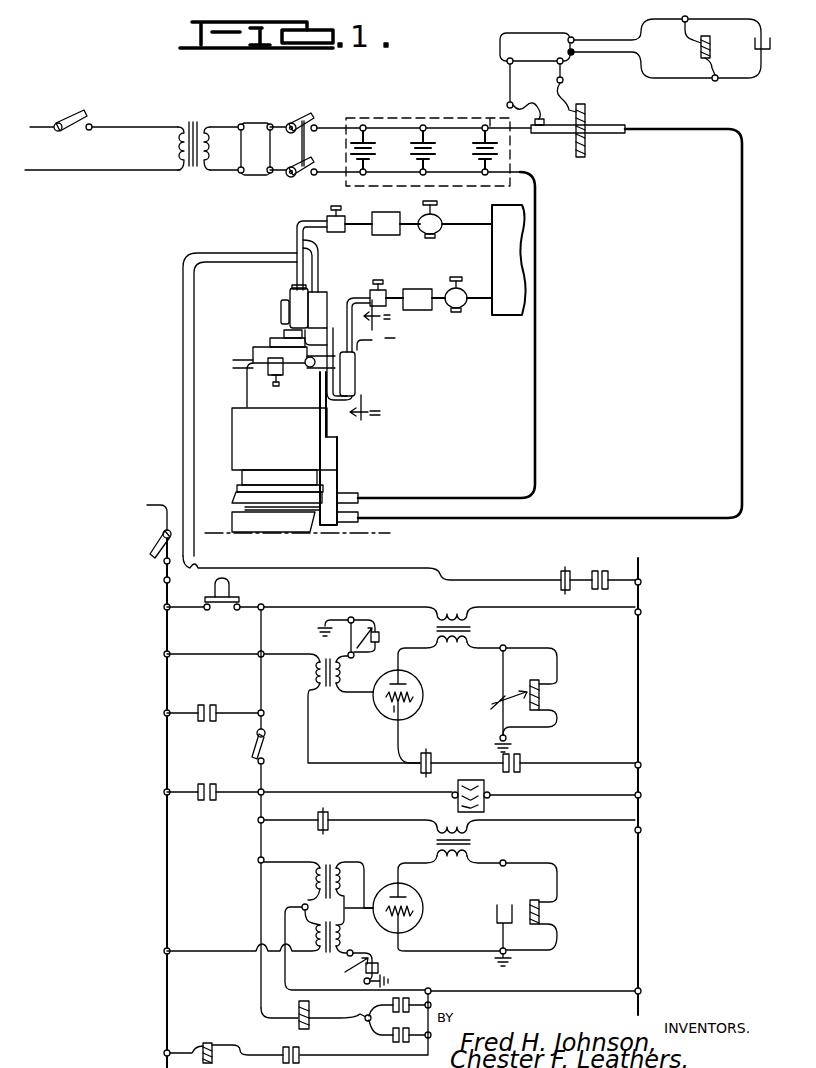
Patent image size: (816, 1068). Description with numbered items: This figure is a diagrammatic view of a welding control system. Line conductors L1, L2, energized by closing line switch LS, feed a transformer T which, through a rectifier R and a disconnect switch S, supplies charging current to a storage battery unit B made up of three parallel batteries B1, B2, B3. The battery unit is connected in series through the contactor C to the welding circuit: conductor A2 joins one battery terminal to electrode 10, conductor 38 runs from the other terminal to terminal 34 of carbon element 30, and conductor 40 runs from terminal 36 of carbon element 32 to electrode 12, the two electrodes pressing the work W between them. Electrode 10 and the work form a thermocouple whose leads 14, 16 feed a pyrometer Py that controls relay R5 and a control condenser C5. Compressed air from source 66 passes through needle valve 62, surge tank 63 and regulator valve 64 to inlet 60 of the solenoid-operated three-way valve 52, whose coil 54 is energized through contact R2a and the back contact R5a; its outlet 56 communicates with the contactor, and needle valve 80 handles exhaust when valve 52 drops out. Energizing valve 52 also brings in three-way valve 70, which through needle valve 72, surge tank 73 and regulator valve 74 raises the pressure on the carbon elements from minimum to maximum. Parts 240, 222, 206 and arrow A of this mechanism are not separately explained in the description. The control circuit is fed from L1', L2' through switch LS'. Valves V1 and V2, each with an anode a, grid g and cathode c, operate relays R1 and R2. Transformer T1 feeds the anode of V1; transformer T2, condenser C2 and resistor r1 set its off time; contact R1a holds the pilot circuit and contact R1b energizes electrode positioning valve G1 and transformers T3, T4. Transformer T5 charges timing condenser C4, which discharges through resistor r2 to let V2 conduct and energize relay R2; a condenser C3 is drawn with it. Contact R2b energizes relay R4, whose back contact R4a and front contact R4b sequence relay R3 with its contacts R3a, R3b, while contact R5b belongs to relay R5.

The line conductor L1 is at (42, 113).
The line switch LS is at (73, 109).
The line conductor L2 is at (102, 157).
The transformer T is at (195, 126).
The rectifier R is at (262, 158).
The disconnect switch S is at (300, 120).
The storage battery unit B is at (387, 118).
The battery B1 is at (370, 156).
The battery B2 is at (430, 156).
The battery B3 is at (495, 156).
The conductor A2 is at (490, 118).
The electrode 10 is at (568, 136).
The electrode 12 is at (610, 134).
The thermocouple lead 14 is at (536, 104).
The thermocouple lead 16 is at (570, 101).
The work W is at (588, 119).
The pyrometer Py is at (523, 33).
The electromagnetic control relay R5 is at (696, 56).
The control condenser C5 is at (768, 50).
The conductor 40 is at (742, 250).
The conductor 38 is at (536, 394).
The flow controlling needle valve 62 is at (336, 206).
The surge tank 63 is at (388, 235).
The pressure controlling regulator valve 64 is at (438, 214).
The source of compressed air 66 is at (510, 318).
The inlet 60 is at (314, 272).
The electro-magnetically operated valve 52 is at (290, 297).
The solenoid 54 is at (324, 303).
The outlet 56 is at (284, 333).
The needle valve 80 is at (272, 388).
The bracket 240 is at (310, 372).
The rate controlling needle valve 72 is at (385, 306).
The surge tank 73 is at (420, 310).
The pressure controlling regulator valve 74 is at (460, 310).
The three-way valve 70 is at (356, 383).
The pipe 222 is at (381, 348).
The direction of motion A is at (374, 315).
The contactor C is at (381, 446).
The electrode holder 206 is at (284, 439).
The carbon element 30 is at (338, 496).
The terminal 34 is at (349, 500).
The carbon element 32 is at (319, 522).
The terminal 36 is at (346, 524).
The line conductor L1' is at (143, 529).
The line switch LS' is at (134, 531).
The line conductor L2' is at (657, 784).
The back contact of relay R5 R5a is at (567, 572).
The contact of relay R2 R2a is at (601, 571).
The transformer T1 is at (472, 629).
The condenser C2 is at (345, 633).
The resistor r1 is at (378, 636).
The transformer T2 is at (342, 674).
The electric valve V1 is at (422, 688).
The relay R1 is at (543, 695).
The contact of relay R1 R1a is at (199, 705).
The back contact of relay R4 R4a is at (430, 758).
The contact of relay R3 R3a is at (518, 755).
The electrode positioning valve G1 is at (457, 785).
The contact of relay R1 R1b is at (199, 784).
The relay contact R5b is at (329, 822).
The transformer T3 is at (472, 842).
The transformer T4 is at (322, 864).
The electric valve V2 is at (418, 900).
The anode a is at (405, 890).
The control grid g is at (414, 912).
The emissive cathode c is at (400, 936).
The capacitor C3 is at (497, 920).
The relay R2 is at (543, 911).
The transformer T5 is at (343, 936).
The timing condenser C4 is at (344, 963).
The resistor r2 is at (379, 967).
The relay R3 is at (300, 1008).
The self-holding contact of relay R3 R3b is at (385, 1002).
The front contact of relay R4 R4b is at (386, 1040).
The contact of relay R2 R2b is at (300, 1042).
The relay R4 is at (214, 1044).